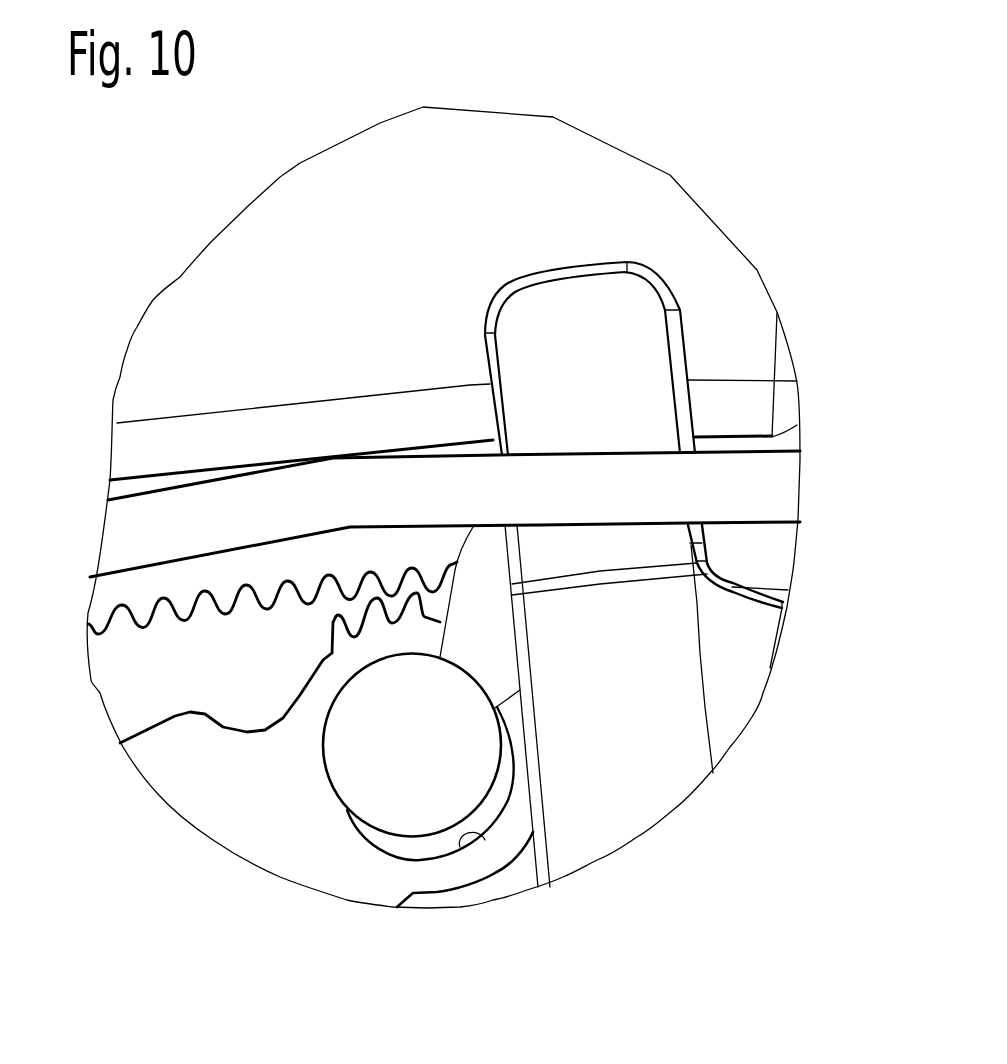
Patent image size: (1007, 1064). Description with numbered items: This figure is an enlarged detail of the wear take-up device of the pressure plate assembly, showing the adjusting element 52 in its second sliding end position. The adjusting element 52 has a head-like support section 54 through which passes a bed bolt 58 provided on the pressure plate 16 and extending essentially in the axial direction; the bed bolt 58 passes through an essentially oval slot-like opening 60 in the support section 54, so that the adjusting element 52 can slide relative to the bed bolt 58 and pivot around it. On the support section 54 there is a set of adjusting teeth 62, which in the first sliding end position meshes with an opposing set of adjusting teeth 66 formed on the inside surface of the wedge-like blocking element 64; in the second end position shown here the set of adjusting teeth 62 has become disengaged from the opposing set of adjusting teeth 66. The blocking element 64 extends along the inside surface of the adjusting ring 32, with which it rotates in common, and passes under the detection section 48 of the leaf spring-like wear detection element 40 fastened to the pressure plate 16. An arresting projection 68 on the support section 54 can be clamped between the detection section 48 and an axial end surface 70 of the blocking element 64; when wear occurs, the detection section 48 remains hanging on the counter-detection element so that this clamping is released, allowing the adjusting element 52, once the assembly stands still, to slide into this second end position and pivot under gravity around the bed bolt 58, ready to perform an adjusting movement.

The pressure plate 16 is at (603, 163).
The adjusting ring 32 is at (763, 483).
The wear detection element 40 is at (687, 752).
The detection section 48 is at (618, 297).
The adjusting element 52 is at (375, 890).
The support section 54 is at (545, 865).
The bed bolt 58 is at (473, 745).
The slot-like opening 60 is at (460, 847).
The set of adjusting teeth 62 is at (415, 607).
The blocking element 64 is at (130, 587).
The opposing set of adjusting teeth 66 is at (158, 622).
The arresting projection 68 is at (477, 560).
The axial end surface 70 is at (382, 538).